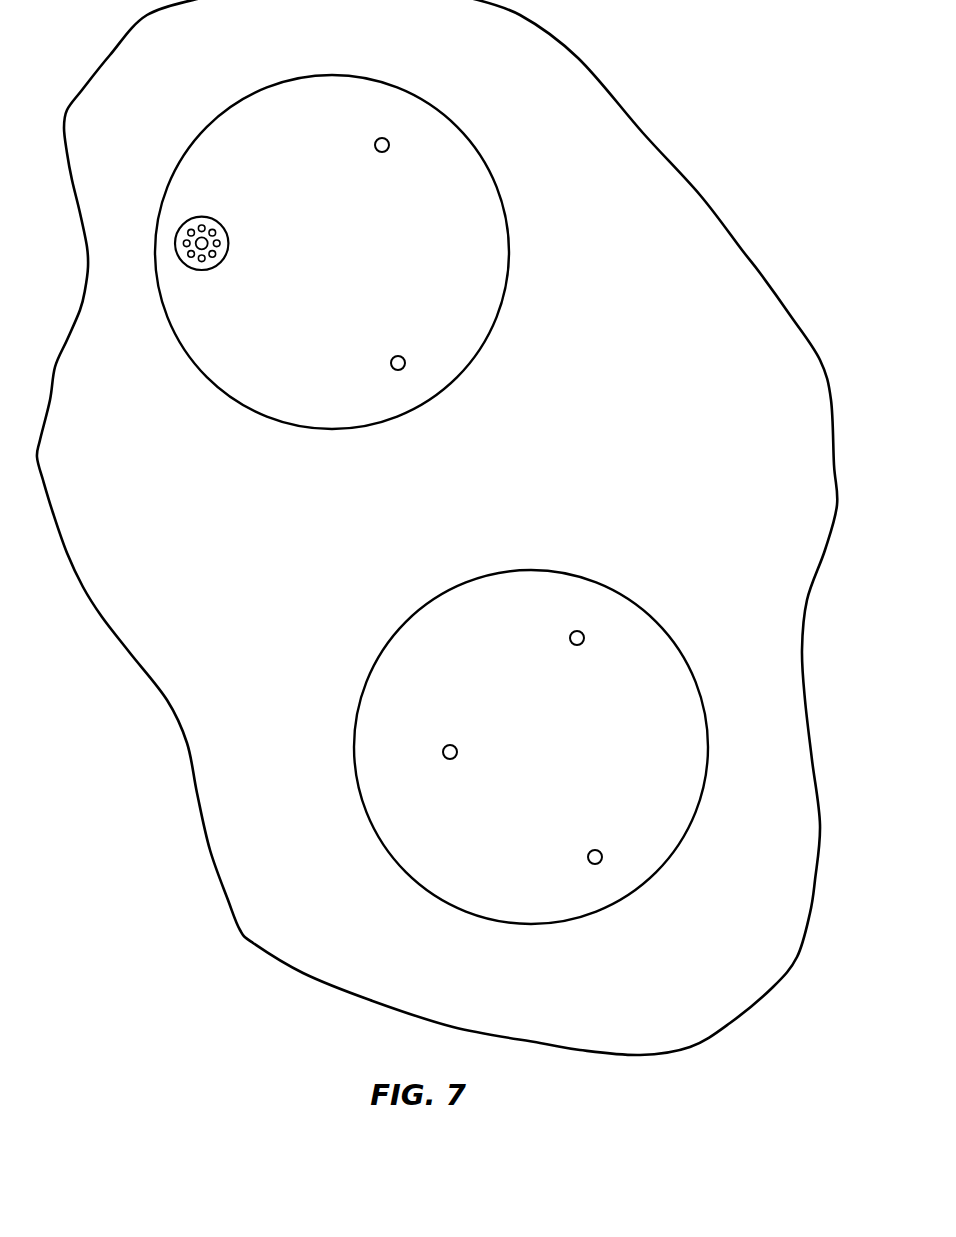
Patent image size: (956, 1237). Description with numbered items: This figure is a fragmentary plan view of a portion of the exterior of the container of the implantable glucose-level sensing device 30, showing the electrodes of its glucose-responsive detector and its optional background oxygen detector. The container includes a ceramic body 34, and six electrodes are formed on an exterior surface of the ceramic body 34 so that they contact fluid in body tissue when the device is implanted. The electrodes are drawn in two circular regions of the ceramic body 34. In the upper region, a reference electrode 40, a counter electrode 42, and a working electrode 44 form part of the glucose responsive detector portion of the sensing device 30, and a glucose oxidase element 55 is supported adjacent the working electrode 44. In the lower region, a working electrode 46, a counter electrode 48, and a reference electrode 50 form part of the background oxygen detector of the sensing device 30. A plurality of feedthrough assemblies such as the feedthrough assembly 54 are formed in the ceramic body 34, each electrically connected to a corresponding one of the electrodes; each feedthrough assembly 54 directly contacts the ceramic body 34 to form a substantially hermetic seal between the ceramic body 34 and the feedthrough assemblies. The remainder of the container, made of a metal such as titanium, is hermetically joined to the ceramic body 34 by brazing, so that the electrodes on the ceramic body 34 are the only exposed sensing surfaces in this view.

The implantable glucose-level sensing device 30 is at (645, 133).
The ceramic body 34 is at (645, 318).
The reference electrode 40 is at (379, 138).
The counter electrode 42 is at (396, 356).
The working electrode 44 is at (203, 261).
The working electrode 46 is at (575, 631).
The counter electrode 48 is at (593, 850).
The reference electrode 50 is at (448, 745).
The feedthrough assembly 54 is at (229, 245).
The glucose oxidase element 55 is at (203, 217).